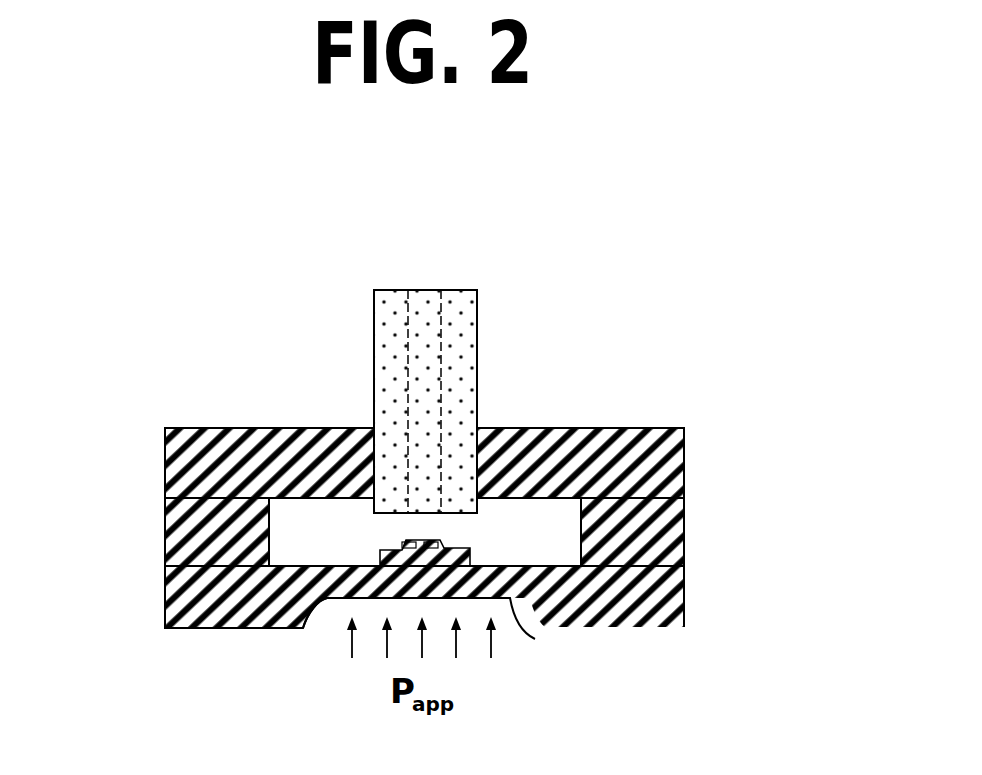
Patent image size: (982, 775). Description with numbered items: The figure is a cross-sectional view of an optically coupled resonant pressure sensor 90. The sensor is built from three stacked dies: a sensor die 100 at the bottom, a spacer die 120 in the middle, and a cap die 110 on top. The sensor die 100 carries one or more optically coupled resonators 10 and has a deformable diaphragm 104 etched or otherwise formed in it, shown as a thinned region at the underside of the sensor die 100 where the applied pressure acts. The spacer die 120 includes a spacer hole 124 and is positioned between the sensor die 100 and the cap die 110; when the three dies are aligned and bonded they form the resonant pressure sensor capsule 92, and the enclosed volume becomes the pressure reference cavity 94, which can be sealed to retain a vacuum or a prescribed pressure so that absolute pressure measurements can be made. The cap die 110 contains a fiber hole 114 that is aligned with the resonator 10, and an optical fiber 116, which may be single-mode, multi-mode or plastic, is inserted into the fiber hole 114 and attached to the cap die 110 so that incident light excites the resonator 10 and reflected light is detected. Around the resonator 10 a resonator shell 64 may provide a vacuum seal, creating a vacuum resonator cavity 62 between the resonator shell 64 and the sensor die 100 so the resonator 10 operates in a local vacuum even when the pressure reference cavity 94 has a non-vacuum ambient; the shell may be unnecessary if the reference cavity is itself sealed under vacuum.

The optically coupled resonant pressure sensor 90 is at (154, 277).
The resonant pressure sensor capsule 92 is at (250, 428).
The optically coupled resonator 10 is at (383, 554).
The vacuum resonator cavity 62 is at (397, 549).
The resonator shell 64 is at (407, 543).
The pressure reference cavity 94 is at (300, 527).
The optical fiber 116 is at (478, 345).
The fiber hole 114 is at (478, 453).
The spacer hole 124 is at (533, 513).
The cap die 110 is at (684, 465).
The spacer die 120 is at (684, 532).
The sensor die 100 is at (684, 600).
The deformable diaphragm 104 is at (535, 639).